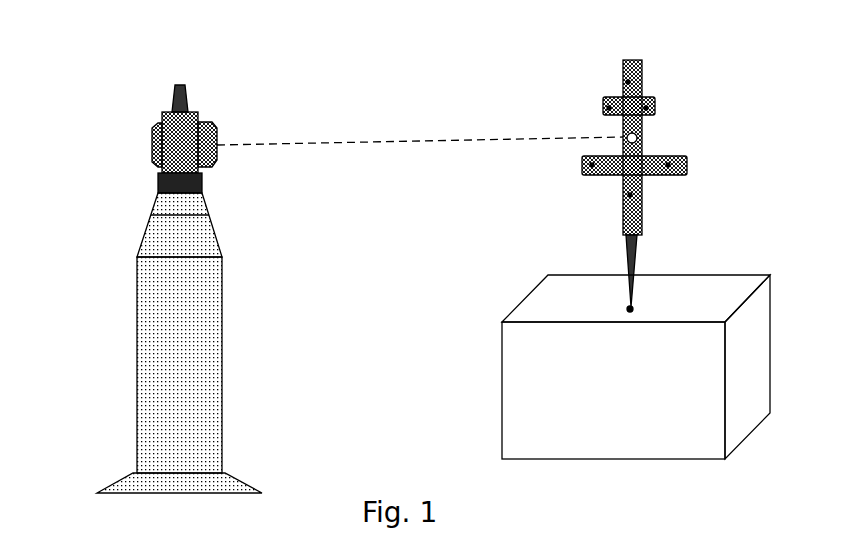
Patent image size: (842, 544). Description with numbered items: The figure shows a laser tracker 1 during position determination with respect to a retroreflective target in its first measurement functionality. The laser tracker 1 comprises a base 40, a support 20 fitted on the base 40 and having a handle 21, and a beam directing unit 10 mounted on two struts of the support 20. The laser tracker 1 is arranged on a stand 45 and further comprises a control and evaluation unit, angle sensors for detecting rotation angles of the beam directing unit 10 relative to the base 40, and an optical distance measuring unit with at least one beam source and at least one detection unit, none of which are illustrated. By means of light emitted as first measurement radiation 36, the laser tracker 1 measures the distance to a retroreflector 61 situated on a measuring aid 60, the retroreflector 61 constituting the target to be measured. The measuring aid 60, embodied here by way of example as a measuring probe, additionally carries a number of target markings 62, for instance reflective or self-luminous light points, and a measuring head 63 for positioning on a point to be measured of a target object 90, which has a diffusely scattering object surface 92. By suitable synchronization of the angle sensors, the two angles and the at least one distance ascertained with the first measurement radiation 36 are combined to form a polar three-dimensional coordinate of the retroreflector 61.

The laser tracker 1 is at (170, 106).
The beam directing unit 10 is at (157, 131).
The support 20 is at (212, 120).
The handle 21 is at (217, 71).
The first measurement radiation 36 is at (420, 126).
The base 40 is at (140, 177).
The stand 45 is at (140, 343).
The measuring aid 60 is at (623, 162).
The retroreflector 61 is at (667, 134).
The target markings 62 is at (626, 136).
The measuring head 63 is at (655, 273).
The target object 90 is at (610, 382).
The object surface 92 is at (623, 407).